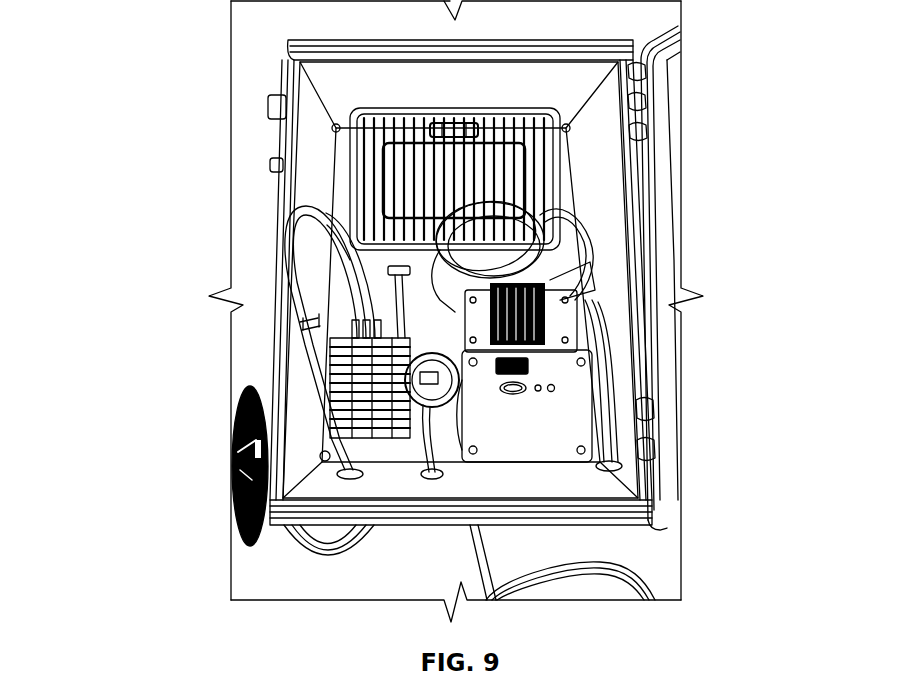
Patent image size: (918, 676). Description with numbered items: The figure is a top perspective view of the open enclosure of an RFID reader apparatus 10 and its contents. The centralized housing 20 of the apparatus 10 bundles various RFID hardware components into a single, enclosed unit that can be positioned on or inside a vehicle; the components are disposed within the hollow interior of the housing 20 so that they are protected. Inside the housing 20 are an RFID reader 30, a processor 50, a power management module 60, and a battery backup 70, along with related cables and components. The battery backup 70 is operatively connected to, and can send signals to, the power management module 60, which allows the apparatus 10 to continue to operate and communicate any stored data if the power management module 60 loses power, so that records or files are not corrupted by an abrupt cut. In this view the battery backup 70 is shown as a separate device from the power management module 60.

The apparatus 10 is at (385, 536).
The centralized housing 20 is at (369, 94).
The RFID reader 30 is at (395, 188).
The processor 50 is at (335, 392).
The power management module 60 is at (538, 420).
The battery backup 70 is at (575, 305).